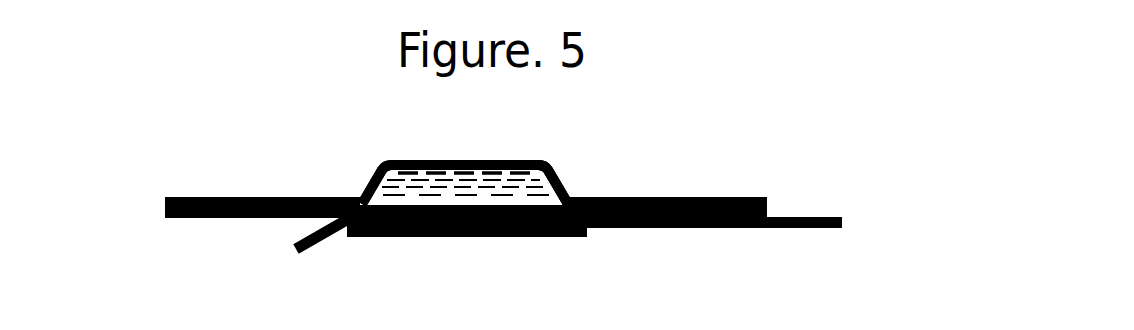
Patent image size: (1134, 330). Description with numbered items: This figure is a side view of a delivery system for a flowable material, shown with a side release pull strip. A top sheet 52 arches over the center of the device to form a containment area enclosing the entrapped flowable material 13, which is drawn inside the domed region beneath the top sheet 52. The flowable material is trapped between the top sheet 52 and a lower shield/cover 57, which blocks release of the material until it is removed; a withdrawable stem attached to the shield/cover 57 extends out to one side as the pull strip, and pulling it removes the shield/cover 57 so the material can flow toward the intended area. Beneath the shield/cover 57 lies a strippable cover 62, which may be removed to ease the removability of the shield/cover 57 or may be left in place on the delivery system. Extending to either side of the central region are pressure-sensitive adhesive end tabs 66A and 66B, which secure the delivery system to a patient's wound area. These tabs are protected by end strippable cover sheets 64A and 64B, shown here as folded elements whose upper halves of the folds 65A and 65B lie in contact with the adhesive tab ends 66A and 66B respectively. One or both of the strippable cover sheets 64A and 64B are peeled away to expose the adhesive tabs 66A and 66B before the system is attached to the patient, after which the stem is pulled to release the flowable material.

The entrapped flowable material 13 is at (378, 178).
The top sheet 52 is at (560, 178).
The lower shield/cover 57 is at (401, 237).
The strippable cover 62 is at (471, 238).
The upper half of fold 65A is at (347, 237).
The upper half of fold 65B is at (595, 228).
The pressure-sensitive adhesive end tab 66A is at (165, 200).
The pressure-sensitive adhesive end tab 66B is at (767, 199).
The end strippable cover sheet 64A is at (165, 215).
The end strippable cover sheet 64B is at (842, 220).